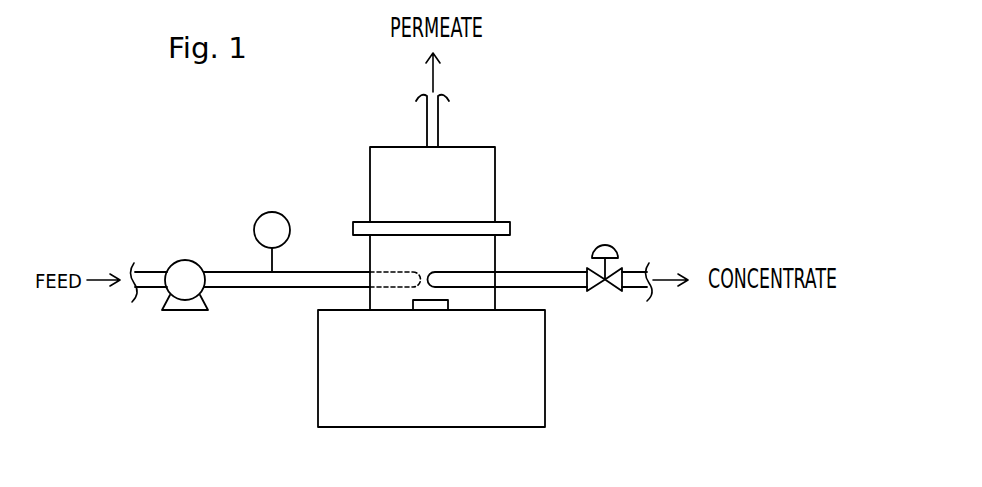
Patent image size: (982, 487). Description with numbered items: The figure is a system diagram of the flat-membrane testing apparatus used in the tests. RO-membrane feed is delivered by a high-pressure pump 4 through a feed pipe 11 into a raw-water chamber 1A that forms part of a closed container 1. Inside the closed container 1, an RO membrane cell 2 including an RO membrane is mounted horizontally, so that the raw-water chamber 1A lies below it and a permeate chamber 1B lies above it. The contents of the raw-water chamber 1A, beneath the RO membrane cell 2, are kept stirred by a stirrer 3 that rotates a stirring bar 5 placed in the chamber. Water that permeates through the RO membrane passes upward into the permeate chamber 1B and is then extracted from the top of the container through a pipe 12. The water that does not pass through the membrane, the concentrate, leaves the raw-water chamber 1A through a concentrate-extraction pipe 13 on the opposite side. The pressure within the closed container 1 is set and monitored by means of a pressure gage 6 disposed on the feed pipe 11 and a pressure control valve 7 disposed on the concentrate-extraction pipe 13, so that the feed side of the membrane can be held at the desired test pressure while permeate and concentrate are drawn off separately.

The closed container 1 is at (437, 200).
The raw-water chamber 1A is at (393, 257).
The permeate chamber 1B is at (469, 170).
The RO membrane cell 2 is at (396, 222).
The stirrer 3 is at (530, 397).
The high-pressure pump 4 is at (178, 262).
The stirring bar 5 is at (440, 305).
The pressure gage 6 is at (262, 213).
The pressure control valve 7 is at (611, 247).
The pipe 11 is at (220, 271).
The pipe 12 is at (427, 127).
The pipe 13 is at (632, 293).